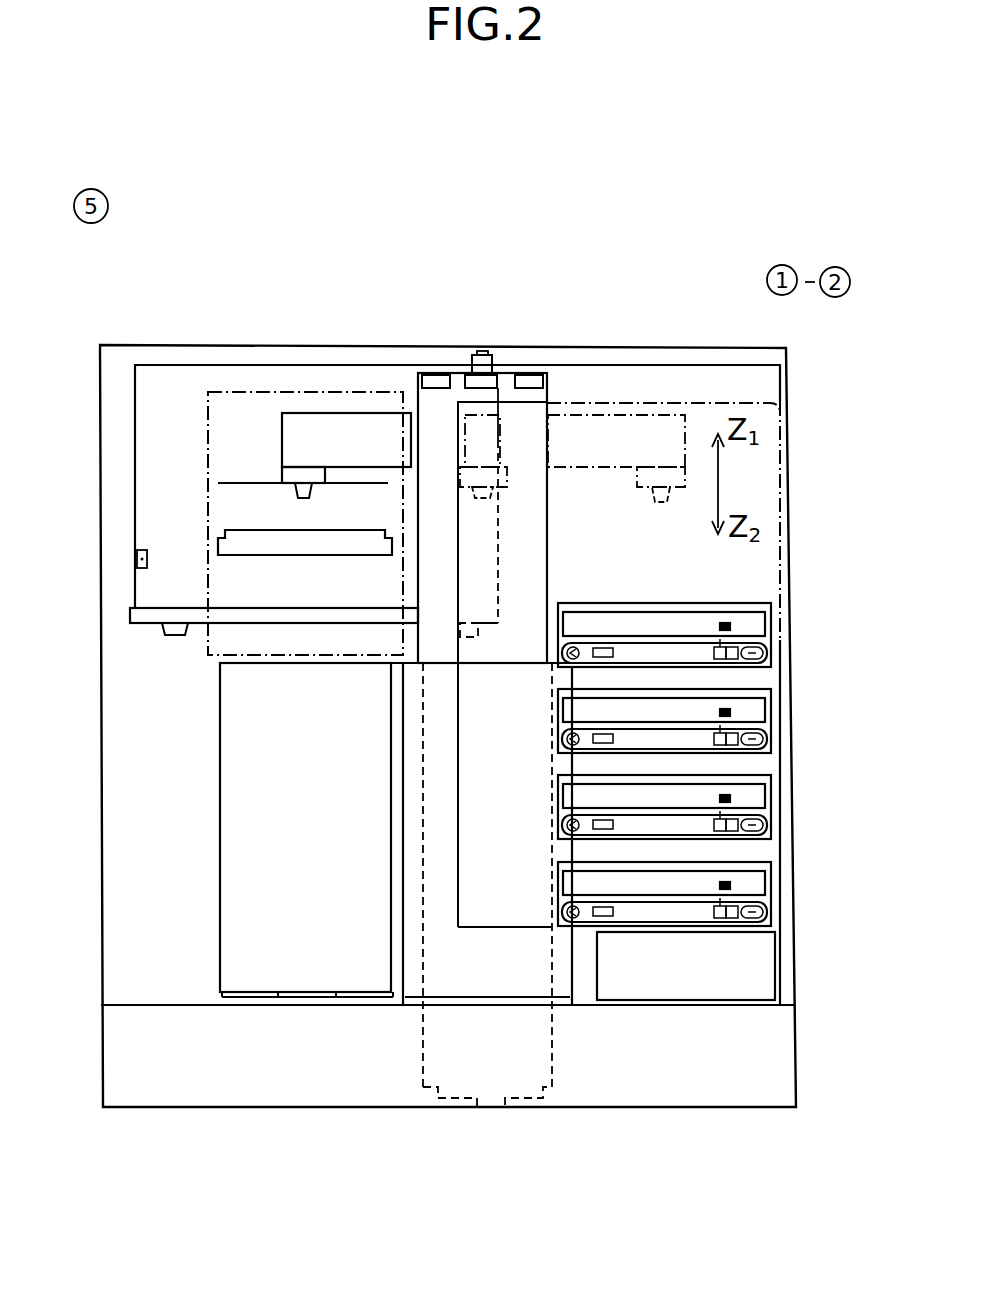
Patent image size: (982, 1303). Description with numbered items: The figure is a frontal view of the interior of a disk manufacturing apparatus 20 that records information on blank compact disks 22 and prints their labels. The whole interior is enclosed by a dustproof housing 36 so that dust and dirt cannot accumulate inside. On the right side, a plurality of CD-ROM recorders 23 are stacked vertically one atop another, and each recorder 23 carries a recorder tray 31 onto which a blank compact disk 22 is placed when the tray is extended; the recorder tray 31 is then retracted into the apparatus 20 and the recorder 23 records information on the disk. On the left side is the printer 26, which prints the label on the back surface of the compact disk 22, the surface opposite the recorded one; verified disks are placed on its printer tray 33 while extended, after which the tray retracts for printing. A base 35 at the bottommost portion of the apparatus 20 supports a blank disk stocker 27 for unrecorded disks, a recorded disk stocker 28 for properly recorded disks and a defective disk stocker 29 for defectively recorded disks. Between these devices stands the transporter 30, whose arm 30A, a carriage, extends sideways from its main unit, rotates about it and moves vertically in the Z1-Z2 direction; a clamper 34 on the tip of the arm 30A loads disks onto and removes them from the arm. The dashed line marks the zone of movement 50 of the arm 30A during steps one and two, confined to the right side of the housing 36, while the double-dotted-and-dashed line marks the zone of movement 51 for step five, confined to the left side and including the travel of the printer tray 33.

The disk manufacturing apparatus 20 is at (512, 158).
The blank compact disk 22 is at (230, 482).
The CD-ROM recorder 23 is at (790, 645).
The printer 26 is at (366, 374).
The blank disk stocker 27 is at (497, 964).
The recorded disk stocker 28 is at (314, 966).
The defective disk stocker 29 is at (742, 978).
The transporter 30 is at (534, 362).
The arm 30A is at (305, 423).
The recorder tray 31 is at (698, 618).
The printer tray 33 is at (228, 538).
The clamper 34 is at (280, 470).
The base 35 is at (693, 1087).
The dustproof housing 36 is at (645, 348).
The zone of movement 50 is at (692, 402).
The zone of movement 51 is at (222, 388).